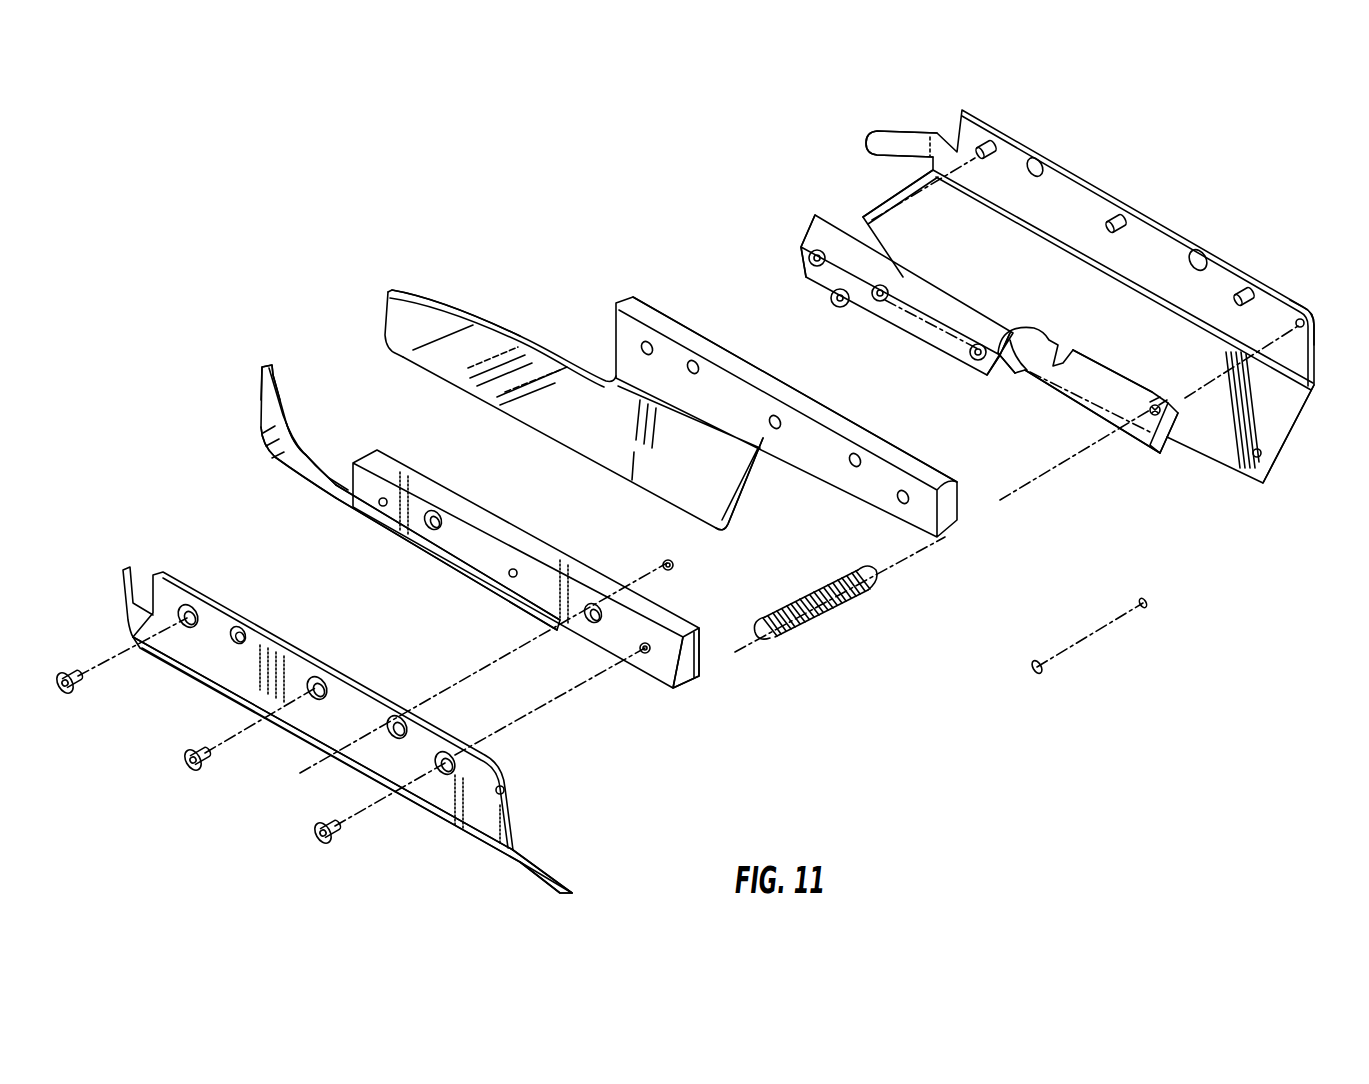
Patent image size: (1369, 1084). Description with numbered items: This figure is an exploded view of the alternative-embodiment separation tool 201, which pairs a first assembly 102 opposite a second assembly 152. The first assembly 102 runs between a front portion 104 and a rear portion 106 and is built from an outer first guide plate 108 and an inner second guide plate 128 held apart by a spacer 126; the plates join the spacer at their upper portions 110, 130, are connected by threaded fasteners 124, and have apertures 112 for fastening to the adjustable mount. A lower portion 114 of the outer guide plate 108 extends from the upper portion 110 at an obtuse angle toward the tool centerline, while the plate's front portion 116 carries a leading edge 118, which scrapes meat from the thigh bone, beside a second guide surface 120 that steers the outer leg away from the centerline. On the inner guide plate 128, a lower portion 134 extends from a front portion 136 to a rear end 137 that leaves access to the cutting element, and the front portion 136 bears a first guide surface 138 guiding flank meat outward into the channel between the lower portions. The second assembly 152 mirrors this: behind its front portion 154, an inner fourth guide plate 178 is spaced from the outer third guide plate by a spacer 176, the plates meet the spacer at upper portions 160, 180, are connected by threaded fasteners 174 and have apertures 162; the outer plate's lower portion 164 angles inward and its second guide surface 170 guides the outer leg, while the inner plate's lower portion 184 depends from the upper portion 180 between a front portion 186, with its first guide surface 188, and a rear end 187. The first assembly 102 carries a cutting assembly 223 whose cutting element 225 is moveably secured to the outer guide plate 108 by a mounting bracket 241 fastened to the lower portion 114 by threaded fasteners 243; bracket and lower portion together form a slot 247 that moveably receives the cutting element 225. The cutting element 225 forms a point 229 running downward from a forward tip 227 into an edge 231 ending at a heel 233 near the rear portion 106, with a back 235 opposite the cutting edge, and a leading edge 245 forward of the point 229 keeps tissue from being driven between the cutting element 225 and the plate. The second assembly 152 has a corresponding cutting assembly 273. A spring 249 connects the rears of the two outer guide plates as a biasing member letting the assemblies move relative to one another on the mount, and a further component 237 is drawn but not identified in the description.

The first assembly 102 is at (1188, 126).
The front portion 104 is at (810, 92).
The rear portion 106 is at (1248, 522).
The outer first guide plate 108 is at (1225, 252).
The upper portion 110 is at (952, 125).
The apertures 112 is at (1198, 250).
The lower portion 114 is at (1283, 405).
The front portion 116 is at (917, 105).
The leading edge 118 is at (893, 197).
The second guide surface 120 is at (875, 131).
The threaded fasteners 124 is at (990, 150).
The spacer 126 is at (830, 413).
The inner second guide plate 128 is at (620, 458).
The upper portion 130 is at (760, 387).
The lower portion 134 is at (662, 500).
The front portion 136 is at (430, 280).
The rear end 137 is at (768, 520).
The first guide surface 138 is at (520, 300).
The second assembly 152 is at (393, 842).
The front portion 154 is at (200, 390).
The upper portion 160 is at (283, 665).
The apertures 162 is at (433, 518).
The lower portion 164 is at (505, 860).
The second guide surface 170 is at (125, 580).
The threaded fasteners 174 is at (85, 690).
The spacer 176 is at (665, 670).
The inner fourth guide plate 178 is at (310, 460).
The upper portion 180 is at (500, 525).
The lower portion 184 is at (468, 580).
The front portion 186 is at (243, 345).
The rear end 187 is at (555, 634).
The first guide surface 188 is at (285, 398).
The separation tool 201 is at (295, 262).
The cutting assembly 223 is at (1145, 492).
The cutting element 225 is at (1115, 430).
The forward tip 227 is at (1020, 330).
The point 229 is at (1025, 405).
The edge 231 is at (1070, 410).
The heel 233 is at (1162, 452).
The back 235 is at (1115, 377).
The screw 237 is at (1158, 402).
The mounting bracket 241 is at (930, 300).
The threaded fasteners 243 is at (900, 272).
The leading edge 245 is at (810, 240).
The slot 247 is at (1000, 385).
The spring 249 is at (830, 620).
The cutting assembly 273 is at (578, 862).